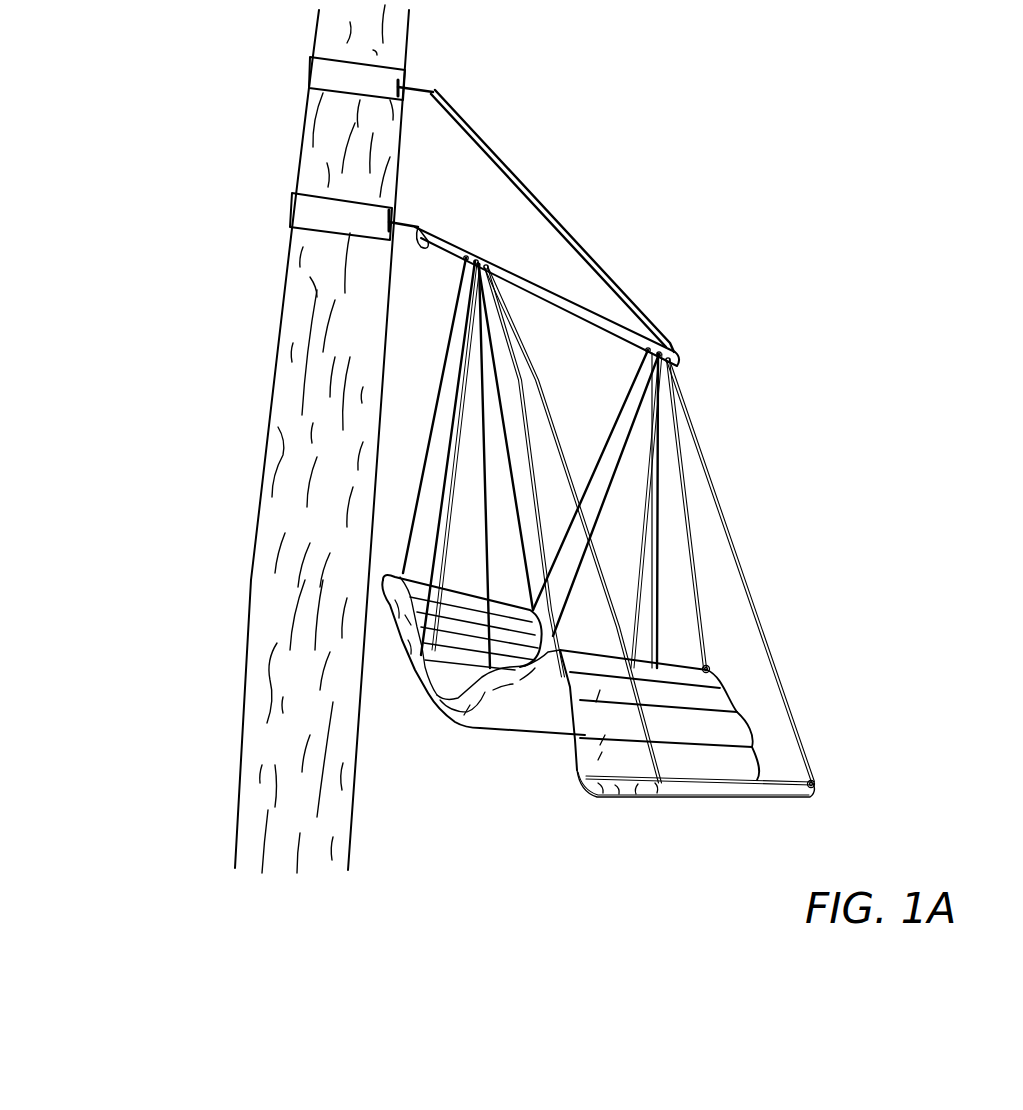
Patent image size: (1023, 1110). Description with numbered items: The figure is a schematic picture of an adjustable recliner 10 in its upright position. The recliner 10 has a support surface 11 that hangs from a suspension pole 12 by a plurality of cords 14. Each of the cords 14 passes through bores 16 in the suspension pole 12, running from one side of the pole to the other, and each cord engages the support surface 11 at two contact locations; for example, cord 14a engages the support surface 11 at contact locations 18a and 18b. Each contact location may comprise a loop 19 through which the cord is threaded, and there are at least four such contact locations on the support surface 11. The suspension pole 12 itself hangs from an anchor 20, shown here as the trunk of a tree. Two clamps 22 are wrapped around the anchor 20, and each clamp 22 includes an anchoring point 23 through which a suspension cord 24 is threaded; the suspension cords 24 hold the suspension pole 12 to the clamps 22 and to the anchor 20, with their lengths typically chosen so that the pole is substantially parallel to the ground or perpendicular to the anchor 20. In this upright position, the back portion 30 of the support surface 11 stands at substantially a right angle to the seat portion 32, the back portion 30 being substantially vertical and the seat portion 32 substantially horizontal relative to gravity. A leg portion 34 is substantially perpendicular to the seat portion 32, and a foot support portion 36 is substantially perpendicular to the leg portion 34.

The adjustable recliner 10 is at (669, 465).
The support surface 11 is at (669, 736).
The suspension pole 12 is at (534, 199).
The cords 14 is at (642, 518).
The cord 14a is at (733, 550).
The bores 16 is at (458, 256).
The contact location 18a is at (710, 670).
The contact location 18b is at (810, 786).
The loop 19 is at (710, 668).
The anchor 20 is at (320, 325).
The clamps 22 is at (328, 80).
The anchoring point 23 is at (403, 222).
The suspension cords 24 is at (490, 153).
The back portion 30 is at (433, 693).
The seat portion 32 is at (470, 690).
The leg portion 34 is at (560, 733).
The foot support portion 36 is at (622, 792).